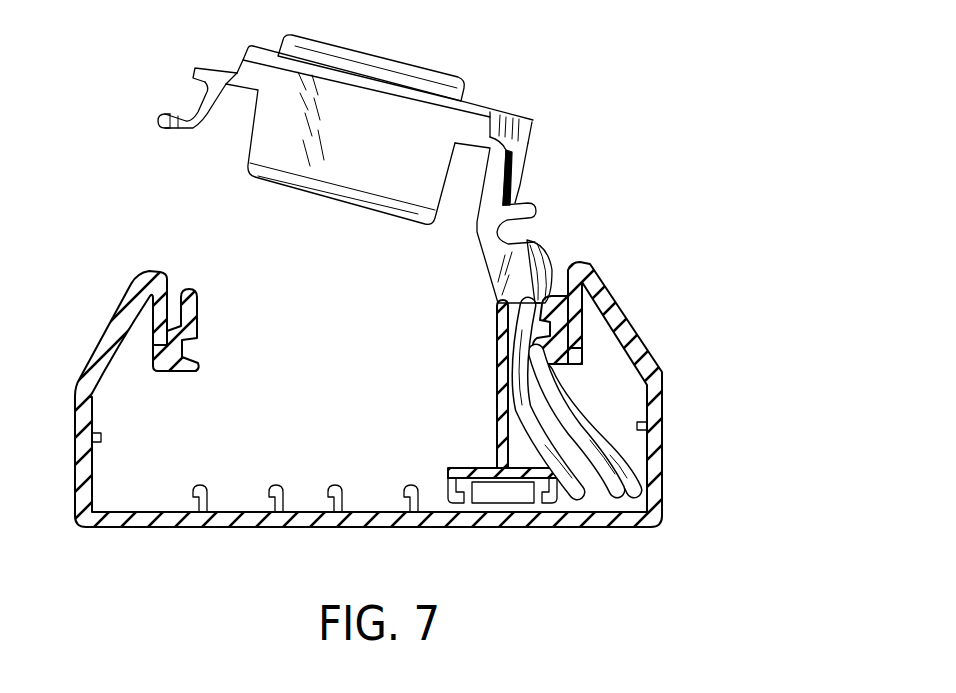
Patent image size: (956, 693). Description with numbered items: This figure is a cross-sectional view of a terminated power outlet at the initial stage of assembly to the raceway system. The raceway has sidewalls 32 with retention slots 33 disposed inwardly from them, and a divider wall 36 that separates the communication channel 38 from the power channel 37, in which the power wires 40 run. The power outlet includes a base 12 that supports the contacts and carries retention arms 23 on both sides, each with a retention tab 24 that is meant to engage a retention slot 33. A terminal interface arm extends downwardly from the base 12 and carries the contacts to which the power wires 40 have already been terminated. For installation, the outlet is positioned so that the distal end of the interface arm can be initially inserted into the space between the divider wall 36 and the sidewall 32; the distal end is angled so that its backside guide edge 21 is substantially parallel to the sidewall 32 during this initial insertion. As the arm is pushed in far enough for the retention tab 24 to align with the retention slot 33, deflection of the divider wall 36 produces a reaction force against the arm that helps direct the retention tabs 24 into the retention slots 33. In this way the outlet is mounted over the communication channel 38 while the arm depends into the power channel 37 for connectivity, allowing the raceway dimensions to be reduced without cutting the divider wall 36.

The base 12 is at (310, 197).
The backside guide edge 21 is at (483, 267).
The retention arm 23 is at (218, 108).
The retention tab 24 is at (157, 122).
The sidewall 32 is at (662, 400).
The retention slot 33 is at (190, 344).
The divider wall 36 is at (497, 396).
The power channel 37 is at (580, 410).
The communication channel 38 is at (318, 433).
The power wires 40 is at (623, 470).